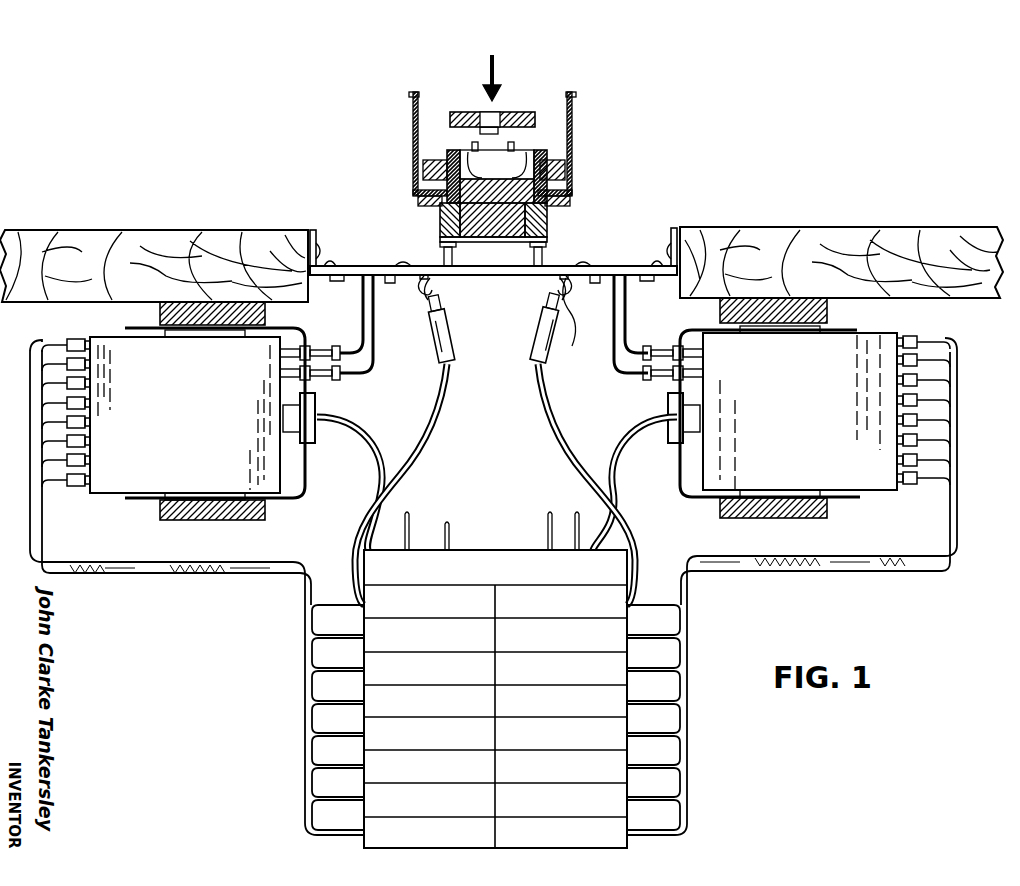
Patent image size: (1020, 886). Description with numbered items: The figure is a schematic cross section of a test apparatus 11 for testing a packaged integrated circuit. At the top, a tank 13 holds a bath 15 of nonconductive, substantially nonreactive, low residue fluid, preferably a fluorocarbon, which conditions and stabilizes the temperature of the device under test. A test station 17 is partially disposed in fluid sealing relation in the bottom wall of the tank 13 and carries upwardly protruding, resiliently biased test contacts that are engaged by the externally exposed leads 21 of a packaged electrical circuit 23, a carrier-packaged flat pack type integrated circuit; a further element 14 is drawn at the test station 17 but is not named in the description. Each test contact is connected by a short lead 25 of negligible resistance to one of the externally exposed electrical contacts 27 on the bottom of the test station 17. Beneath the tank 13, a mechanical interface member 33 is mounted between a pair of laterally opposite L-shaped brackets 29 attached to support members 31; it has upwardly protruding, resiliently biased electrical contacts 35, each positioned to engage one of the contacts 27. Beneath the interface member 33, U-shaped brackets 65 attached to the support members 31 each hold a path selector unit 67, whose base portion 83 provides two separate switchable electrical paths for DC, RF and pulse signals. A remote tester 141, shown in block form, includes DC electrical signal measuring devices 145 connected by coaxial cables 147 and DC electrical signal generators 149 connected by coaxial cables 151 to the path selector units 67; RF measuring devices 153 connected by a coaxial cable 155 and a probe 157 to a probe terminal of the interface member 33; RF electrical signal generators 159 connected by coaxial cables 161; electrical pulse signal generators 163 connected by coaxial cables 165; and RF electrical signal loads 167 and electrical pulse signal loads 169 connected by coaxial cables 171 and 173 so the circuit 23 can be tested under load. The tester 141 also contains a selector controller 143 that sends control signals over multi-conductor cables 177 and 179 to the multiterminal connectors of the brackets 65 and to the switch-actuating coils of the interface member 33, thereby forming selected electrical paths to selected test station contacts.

The test apparatus 11 is at (682, 125).
The tank 13 is at (574, 114).
The contact pin 14 is at (516, 143).
The bath 15 is at (470, 143).
The test station 17 is at (548, 216).
The externally exposed leads 21 is at (531, 123).
The packaged electrical circuit 23 is at (520, 110).
The short lead 25 is at (565, 168).
The externally exposed electrical contacts 27 is at (545, 248).
The L-shaped brackets 29 is at (313, 252).
The support members 31 is at (135, 236).
The mechanical interface member 33 is at (626, 256).
The resiliently biased electrical contacts 35 is at (463, 242).
The U-shaped brackets 65 is at (308, 331).
The path selector unit 67 is at (98, 500).
The base portion 83 is at (876, 500).
The tester 141 is at (496, 540).
The selector controller 143 is at (467, 548).
The DC electrical signal measuring devices 145 is at (364, 629).
The coaxial cable 147 is at (627, 628).
The DC electrical signal generators 149 is at (364, 663).
The coaxial cable 151 is at (627, 662).
The RF measuring devices 153 is at (362, 603).
The coaxial cable 155 is at (631, 527).
The probe 157 is at (537, 318).
The RF electrical signal generators 159 is at (364, 696).
The coaxial cable 161 is at (627, 695).
The electrical pulse signal generators 163 is at (364, 729).
The coaxial cables 165 is at (627, 727).
The RF electrical signal loads 167 is at (364, 761).
The electrical pulse signal loads 169 is at (364, 793).
The coaxial cables 171 is at (627, 760).
The coaxial cables 173 is at (627, 792).
The multi-conductor cable 177 is at (618, 443).
The multi-conductor cable 179 is at (550, 512).